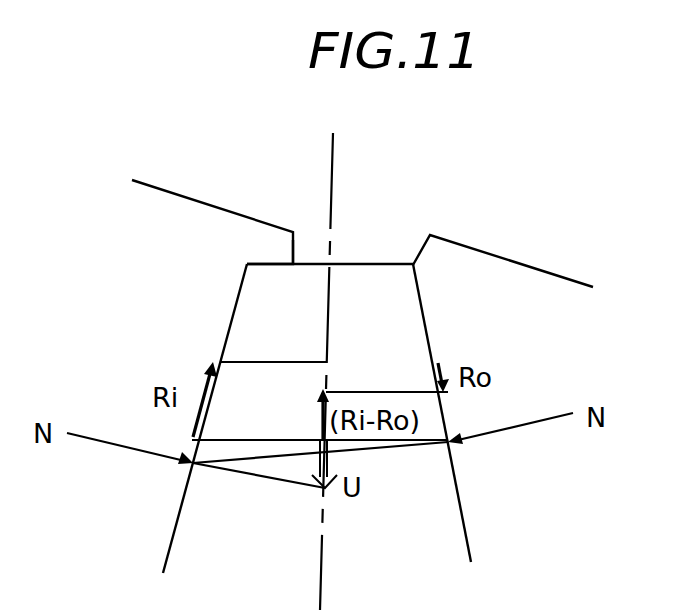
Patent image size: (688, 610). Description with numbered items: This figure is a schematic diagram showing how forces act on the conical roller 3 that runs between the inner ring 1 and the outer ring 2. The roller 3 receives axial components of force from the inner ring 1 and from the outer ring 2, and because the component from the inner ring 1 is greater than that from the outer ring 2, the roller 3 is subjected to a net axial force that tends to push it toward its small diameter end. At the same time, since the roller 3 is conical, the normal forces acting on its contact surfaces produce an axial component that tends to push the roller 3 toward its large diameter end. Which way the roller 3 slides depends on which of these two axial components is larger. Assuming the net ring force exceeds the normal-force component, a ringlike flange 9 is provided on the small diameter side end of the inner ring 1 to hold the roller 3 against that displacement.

The inner ring 1 is at (195, 245).
The ringlike flange 9 is at (270, 238).
The roller 3 is at (372, 297).
The outer ring 2 is at (460, 273).